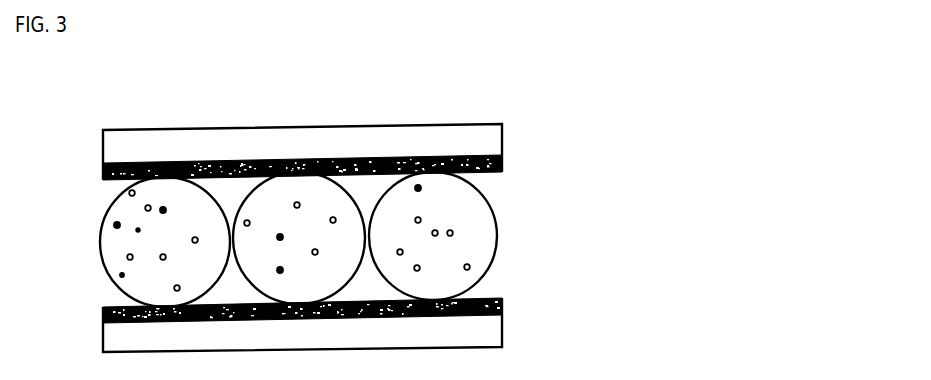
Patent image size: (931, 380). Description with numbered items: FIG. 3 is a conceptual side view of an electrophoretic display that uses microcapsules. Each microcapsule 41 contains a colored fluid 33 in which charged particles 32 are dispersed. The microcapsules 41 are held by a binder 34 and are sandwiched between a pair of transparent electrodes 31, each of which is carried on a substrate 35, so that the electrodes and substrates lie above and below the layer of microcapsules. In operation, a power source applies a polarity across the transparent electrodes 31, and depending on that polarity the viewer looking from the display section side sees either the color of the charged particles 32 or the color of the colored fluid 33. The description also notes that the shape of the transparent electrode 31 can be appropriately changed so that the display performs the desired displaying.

The transparent electrode 31 is at (495, 300).
The charged particle 32 is at (452, 202).
The colored fluid 33 is at (470, 250).
The binder 34 is at (367, 283).
The substrate 35 is at (420, 142).
The microcapsule 41 is at (358, 197).